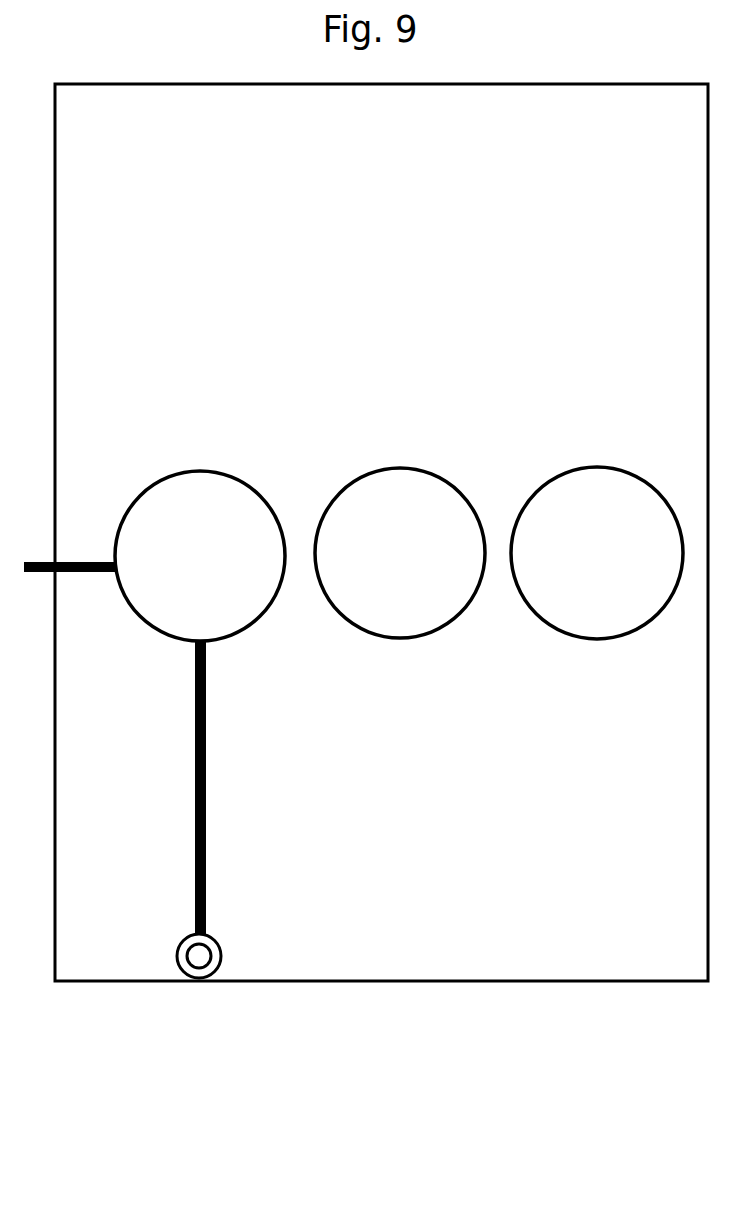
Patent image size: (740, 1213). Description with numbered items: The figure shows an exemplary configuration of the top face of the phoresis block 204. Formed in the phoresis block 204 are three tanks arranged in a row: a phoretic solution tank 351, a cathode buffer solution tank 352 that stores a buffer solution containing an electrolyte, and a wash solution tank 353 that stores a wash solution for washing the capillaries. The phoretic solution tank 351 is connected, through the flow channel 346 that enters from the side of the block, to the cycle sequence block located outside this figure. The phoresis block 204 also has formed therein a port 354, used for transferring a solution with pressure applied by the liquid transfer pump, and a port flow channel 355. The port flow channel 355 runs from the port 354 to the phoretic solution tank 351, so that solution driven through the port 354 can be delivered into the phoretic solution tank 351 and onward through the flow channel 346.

The phoresis block 204 is at (383, 1071).
The flow channel 346 is at (82, 560).
The phoretic solution tank 351 is at (200, 556).
The cathode buffer solution tank 352 is at (400, 553).
The wash solution tank 353 is at (597, 553).
The port 354 is at (224, 956).
The port flow channel 355 is at (195, 706).